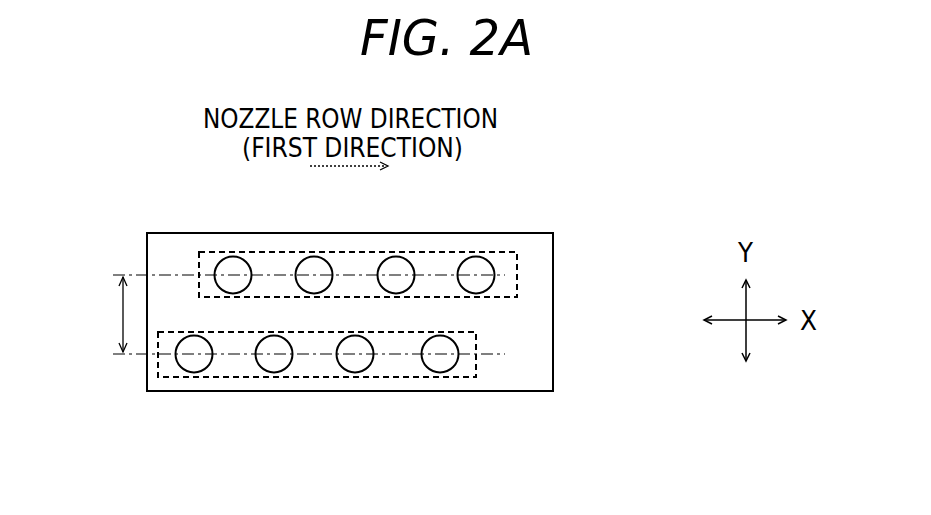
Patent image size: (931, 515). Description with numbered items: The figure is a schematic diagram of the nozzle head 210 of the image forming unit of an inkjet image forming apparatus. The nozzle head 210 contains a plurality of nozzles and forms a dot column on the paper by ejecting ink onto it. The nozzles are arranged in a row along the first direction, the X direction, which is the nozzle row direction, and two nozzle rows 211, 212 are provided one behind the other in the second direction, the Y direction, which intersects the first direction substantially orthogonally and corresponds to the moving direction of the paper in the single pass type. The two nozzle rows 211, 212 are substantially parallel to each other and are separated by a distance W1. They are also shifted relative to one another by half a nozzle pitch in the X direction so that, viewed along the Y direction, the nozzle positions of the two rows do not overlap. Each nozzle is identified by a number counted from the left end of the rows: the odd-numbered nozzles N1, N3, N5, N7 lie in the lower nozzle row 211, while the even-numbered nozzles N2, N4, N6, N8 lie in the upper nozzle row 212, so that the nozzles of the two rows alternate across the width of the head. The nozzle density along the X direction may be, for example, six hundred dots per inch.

The nozzle head 210 is at (553, 240).
The nozzle row 211 is at (476, 342).
The nozzle row 212 is at (517, 262).
The nozzle No. 1 N1 is at (195, 373).
The nozzle No. 2 N2 is at (235, 256).
The nozzle No. 3 N3 is at (274, 373).
The nozzle No. 4 N4 is at (314, 256).
The nozzle No. 5 N5 is at (356, 373).
The nozzle No. 6 N6 is at (397, 256).
The nozzle No. 7 N7 is at (440, 373).
The nozzle No. 8 N8 is at (477, 256).
The distance between nozzle rows W1 is at (102, 314).